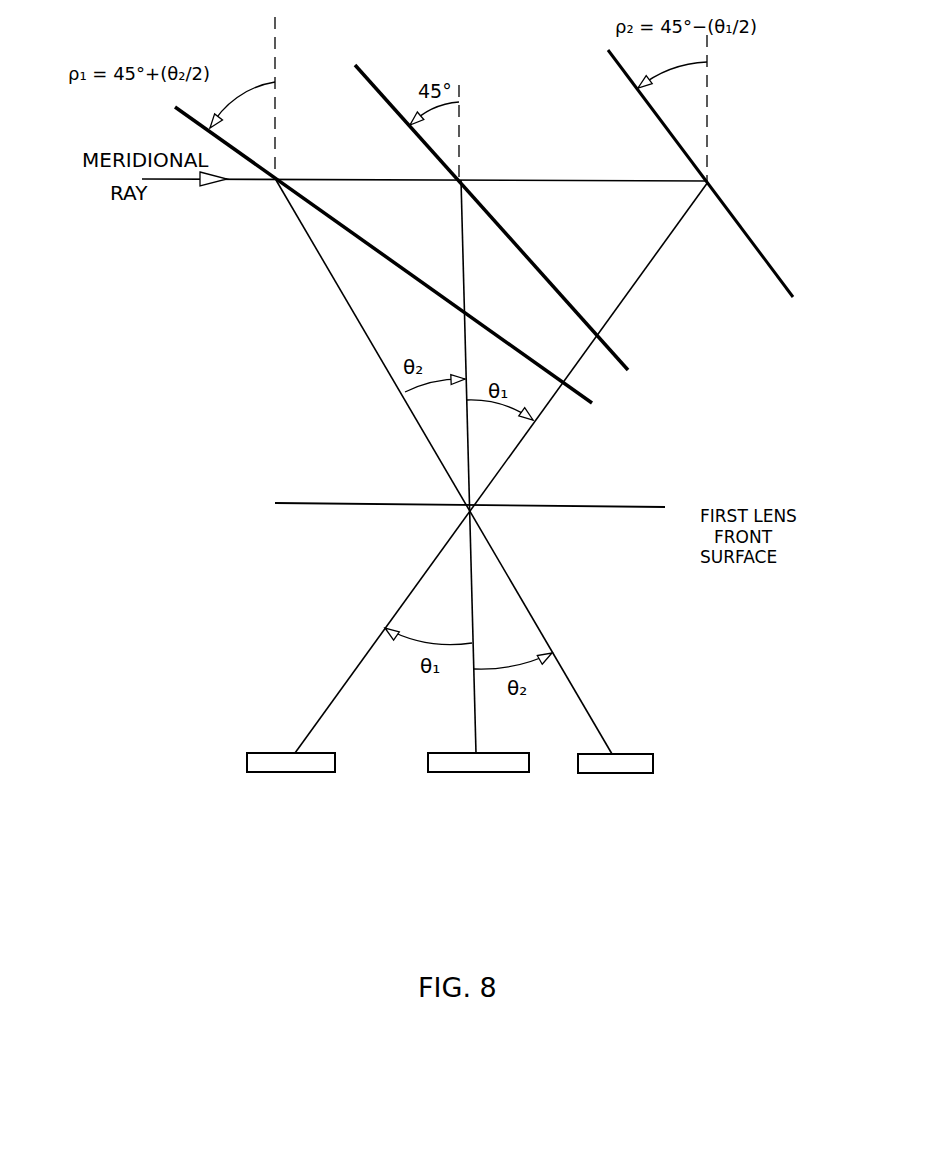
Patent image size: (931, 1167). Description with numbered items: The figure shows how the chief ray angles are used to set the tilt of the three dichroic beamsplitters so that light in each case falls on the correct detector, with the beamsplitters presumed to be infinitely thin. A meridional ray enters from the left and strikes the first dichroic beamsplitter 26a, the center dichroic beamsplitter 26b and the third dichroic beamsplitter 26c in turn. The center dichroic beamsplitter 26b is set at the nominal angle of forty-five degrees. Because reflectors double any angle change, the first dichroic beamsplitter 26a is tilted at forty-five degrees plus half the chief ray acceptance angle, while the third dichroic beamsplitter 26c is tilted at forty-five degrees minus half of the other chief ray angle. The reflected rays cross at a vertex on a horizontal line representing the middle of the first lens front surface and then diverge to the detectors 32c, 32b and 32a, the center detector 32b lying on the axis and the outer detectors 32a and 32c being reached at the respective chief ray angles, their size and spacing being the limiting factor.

The first dichroic beamsplitter 26a is at (378, 250).
The center dichroic beamsplitter 26b is at (538, 268).
The third dichroic beamsplitter 26c is at (762, 258).
The detector 32a is at (615, 768).
The center detector 32b is at (497, 768).
The detector 32c is at (312, 762).